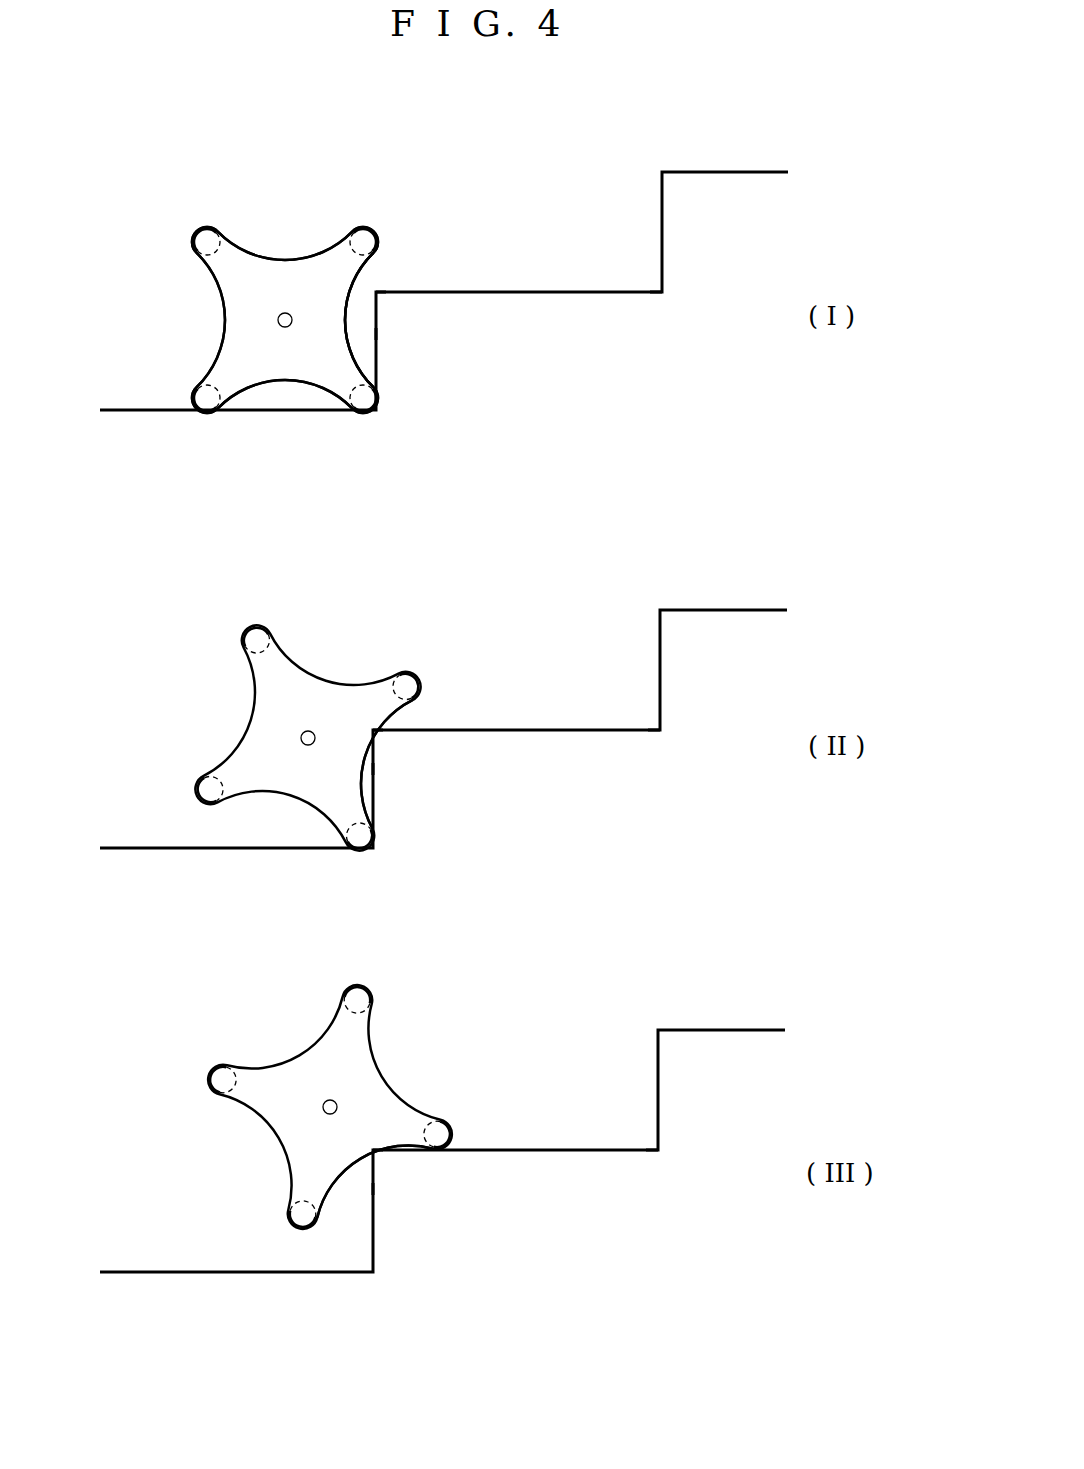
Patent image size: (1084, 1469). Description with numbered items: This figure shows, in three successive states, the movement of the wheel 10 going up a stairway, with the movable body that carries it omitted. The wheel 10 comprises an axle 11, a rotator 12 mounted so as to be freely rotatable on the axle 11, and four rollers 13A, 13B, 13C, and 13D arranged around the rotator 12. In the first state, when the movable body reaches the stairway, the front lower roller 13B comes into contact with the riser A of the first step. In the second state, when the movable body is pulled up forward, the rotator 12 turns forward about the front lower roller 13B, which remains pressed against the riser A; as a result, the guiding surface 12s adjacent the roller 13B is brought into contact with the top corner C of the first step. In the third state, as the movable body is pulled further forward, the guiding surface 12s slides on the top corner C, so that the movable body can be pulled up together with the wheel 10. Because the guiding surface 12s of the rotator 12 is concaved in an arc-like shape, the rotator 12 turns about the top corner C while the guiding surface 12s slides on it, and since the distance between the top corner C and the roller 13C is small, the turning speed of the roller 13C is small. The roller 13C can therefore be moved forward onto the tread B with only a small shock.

The wheel 10 is at (150, 237).
The axle 11 is at (277, 322).
The rotator 12 is at (427, 1055).
The guiding surface 12s is at (335, 1300).
The roller 13A is at (194, 392).
The front lower roller 13B is at (338, 410).
The roller 13C is at (372, 228).
The roller 13D is at (197, 228).
The riser A is at (375, 333).
The tread B is at (635, 292).
The top corner C is at (377, 293).